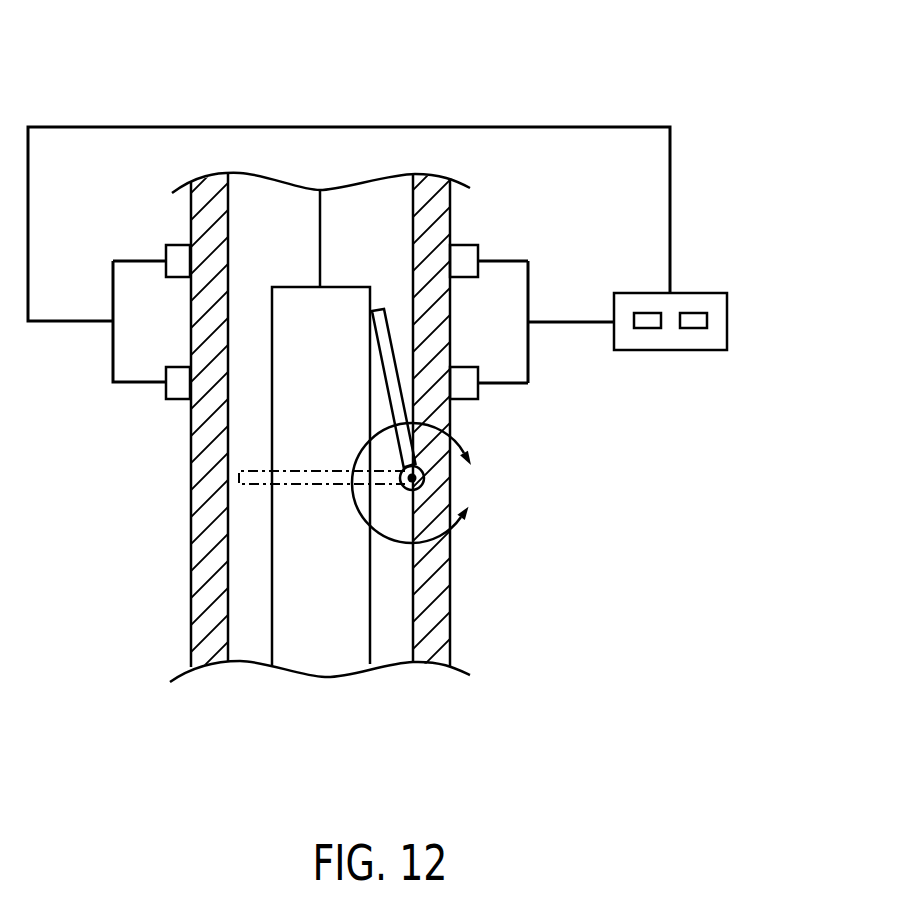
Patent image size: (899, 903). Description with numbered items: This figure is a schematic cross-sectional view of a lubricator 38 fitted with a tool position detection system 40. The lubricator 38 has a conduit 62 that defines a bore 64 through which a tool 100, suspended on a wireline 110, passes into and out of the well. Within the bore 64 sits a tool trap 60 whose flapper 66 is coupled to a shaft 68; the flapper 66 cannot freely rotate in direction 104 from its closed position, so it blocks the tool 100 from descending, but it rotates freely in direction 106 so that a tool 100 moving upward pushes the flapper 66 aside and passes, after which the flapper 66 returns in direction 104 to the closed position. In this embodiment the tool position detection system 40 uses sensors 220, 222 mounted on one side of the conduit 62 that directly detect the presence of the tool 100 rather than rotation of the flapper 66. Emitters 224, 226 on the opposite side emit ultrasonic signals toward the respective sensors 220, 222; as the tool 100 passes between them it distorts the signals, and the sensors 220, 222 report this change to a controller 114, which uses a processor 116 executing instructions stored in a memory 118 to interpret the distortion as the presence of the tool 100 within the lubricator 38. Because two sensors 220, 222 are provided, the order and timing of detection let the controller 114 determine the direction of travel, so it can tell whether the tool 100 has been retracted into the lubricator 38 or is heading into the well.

The lubricator 38 is at (157, 58).
The tool position detection system 40 is at (614, 440).
The tool trap 60 is at (68, 514).
The conduit 62 is at (222, 600).
The bore 64 is at (253, 640).
The flapper 66 is at (392, 382).
The shaft 68 is at (404, 468).
The tool 100 is at (345, 588).
The direction 104 is at (432, 542).
The direction 106 is at (433, 430).
The wireline 110 is at (319, 220).
The controller 114 is at (728, 320).
The processor 116 is at (648, 328).
The memory 118 is at (693, 328).
The sensor 220 is at (463, 246).
The sensor 222 is at (464, 399).
The emitter 224 is at (178, 245).
The emitter 226 is at (178, 400).